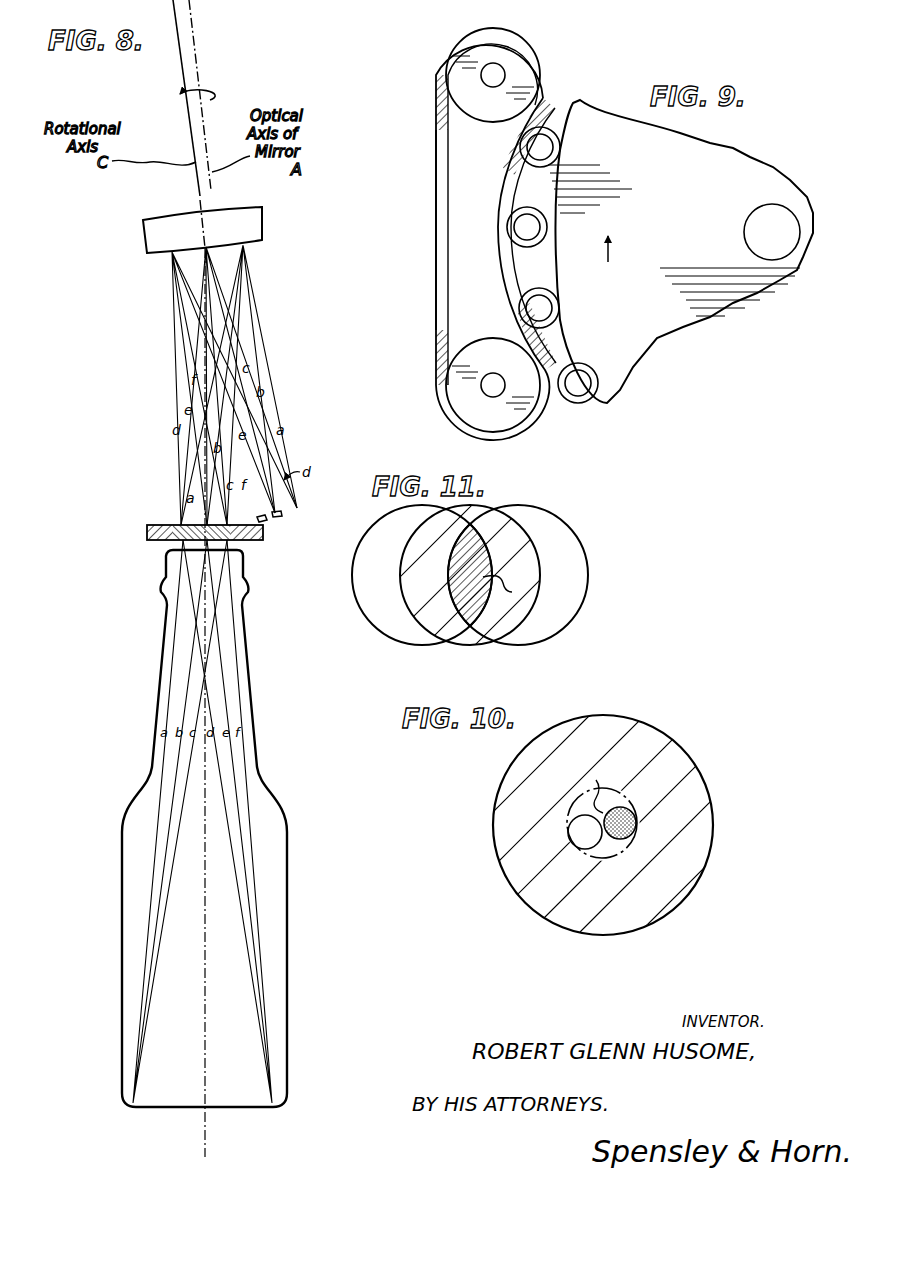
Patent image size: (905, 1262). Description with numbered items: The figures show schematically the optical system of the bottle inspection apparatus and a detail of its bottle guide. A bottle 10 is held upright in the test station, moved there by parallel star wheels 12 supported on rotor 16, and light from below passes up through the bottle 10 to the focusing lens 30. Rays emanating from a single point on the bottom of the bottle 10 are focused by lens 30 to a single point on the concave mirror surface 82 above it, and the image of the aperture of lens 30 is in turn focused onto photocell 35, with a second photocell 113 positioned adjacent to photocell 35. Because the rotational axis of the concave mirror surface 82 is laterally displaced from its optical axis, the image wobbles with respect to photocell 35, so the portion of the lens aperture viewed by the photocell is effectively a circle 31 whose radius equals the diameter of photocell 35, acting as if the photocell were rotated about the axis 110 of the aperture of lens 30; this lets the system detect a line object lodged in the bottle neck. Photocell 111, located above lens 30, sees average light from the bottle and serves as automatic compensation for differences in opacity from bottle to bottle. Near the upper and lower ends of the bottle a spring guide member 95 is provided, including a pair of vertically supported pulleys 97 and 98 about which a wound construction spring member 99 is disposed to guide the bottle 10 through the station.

In FIG. 8, the bottle 10 is at (118, 931).
In FIG. 9, the bottle 10 is at (557, 106).
In FIG. 11, the bottle 10 is at (357, 612).
In FIG. 9, the star wheel 12 is at (678, 245).
In FIG. 9, the rotor 16 is at (772, 205).
In FIG. 8, the focusing lens 30 is at (173, 540).
In FIG. 10, the focusing lens 30 is at (694, 760).
In FIG. 10, the circle 31 is at (634, 784).
In FIG. 8, the photocell 35 is at (283, 515).
In FIG. 11, the photocell 35 is at (512, 592).
In FIG. 10, the photocell 35 is at (637, 823).
In FIG. 8, the concave mirror 82 is at (262, 242).
In FIG. 9, the spring guide member 95 is at (549, 57).
In FIG. 9, the pulley 97 is at (452, 404).
In FIG. 9, the pulley 98 is at (513, 36).
In FIG. 9, the wound construction spring member 99 is at (438, 203).
In FIG. 10, the axis of the aperture of lens 110 is at (585, 787).
In FIG. 11, the photocell 111 is at (455, 620).
In FIG. 8, the second photocell 113 is at (264, 521).
In FIG. 11, the second photocell 113 is at (543, 514).